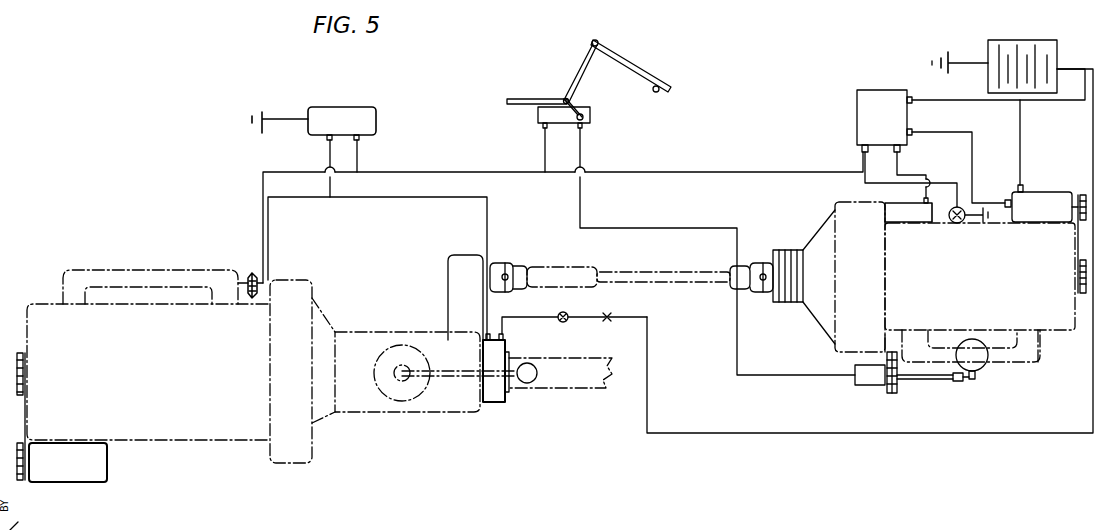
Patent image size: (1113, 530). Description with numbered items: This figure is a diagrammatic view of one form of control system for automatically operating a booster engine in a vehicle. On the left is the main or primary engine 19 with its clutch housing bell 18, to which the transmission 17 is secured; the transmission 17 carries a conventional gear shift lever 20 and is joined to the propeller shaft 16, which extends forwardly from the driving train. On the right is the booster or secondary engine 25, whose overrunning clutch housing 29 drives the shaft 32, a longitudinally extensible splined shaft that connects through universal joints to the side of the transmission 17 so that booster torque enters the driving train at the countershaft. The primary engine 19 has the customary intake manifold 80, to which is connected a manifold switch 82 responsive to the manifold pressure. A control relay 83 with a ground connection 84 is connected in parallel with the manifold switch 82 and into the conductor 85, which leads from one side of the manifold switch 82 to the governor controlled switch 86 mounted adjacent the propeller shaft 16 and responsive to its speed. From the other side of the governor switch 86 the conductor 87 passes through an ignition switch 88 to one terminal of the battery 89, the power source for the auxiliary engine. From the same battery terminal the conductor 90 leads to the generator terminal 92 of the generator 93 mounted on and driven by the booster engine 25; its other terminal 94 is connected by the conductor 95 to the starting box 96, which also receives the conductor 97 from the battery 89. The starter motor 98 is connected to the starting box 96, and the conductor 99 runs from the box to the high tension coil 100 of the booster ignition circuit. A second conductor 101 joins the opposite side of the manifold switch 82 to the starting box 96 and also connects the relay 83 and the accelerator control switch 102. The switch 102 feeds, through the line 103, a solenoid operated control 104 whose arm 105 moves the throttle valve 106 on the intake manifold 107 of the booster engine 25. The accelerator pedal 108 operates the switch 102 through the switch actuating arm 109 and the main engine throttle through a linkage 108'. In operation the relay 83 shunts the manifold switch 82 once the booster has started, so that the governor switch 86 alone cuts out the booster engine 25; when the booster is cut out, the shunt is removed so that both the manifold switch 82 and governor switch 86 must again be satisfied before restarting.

The propeller shaft 16 is at (570, 386).
The transmission 17 is at (472, 407).
The clutch housing bell 18 is at (320, 415).
The main or primary engine 19 is at (183, 440).
The gear shift lever 20 is at (443, 377).
The booster or secondary engine 25 is at (1063, 332).
The bell shaped housing of the overrunning clutch 29 is at (813, 238).
The shaft 32 is at (647, 281).
The intake manifold 80 is at (160, 270).
The manifold switch 82 is at (250, 273).
The control relay 83 is at (355, 113).
The ground connection 84 is at (280, 118).
The conductor 85 is at (366, 199).
The governor controlled switch 86 is at (497, 405).
The conductor 87 is at (657, 435).
The ignition switch 88 is at (567, 313).
The battery 89 is at (1058, 57).
The conductor 90 is at (1075, 101).
The generator terminal 92 is at (1024, 187).
The generator 93 is at (1050, 198).
The generator terminal 94 is at (1007, 201).
The conductor 95 is at (973, 158).
The starting box 96 is at (857, 120).
The conductor 97 is at (930, 98).
The starter motor 98 is at (910, 222).
The conductor 99 is at (945, 183).
The high tension coil 100 is at (960, 225).
The second conductor 101 is at (736, 172).
The accelerator control switch 102 is at (538, 110).
The line 103 is at (643, 229).
The solenoid operated control 104 is at (878, 384).
The arm 105 is at (938, 381).
The throttle valve 106 is at (979, 364).
The intake manifold 107 is at (1035, 370).
The accelerator pedal 108 is at (620, 62).
The linkage 108' is at (537, 88).
The switch actuating arm 109 is at (575, 102).